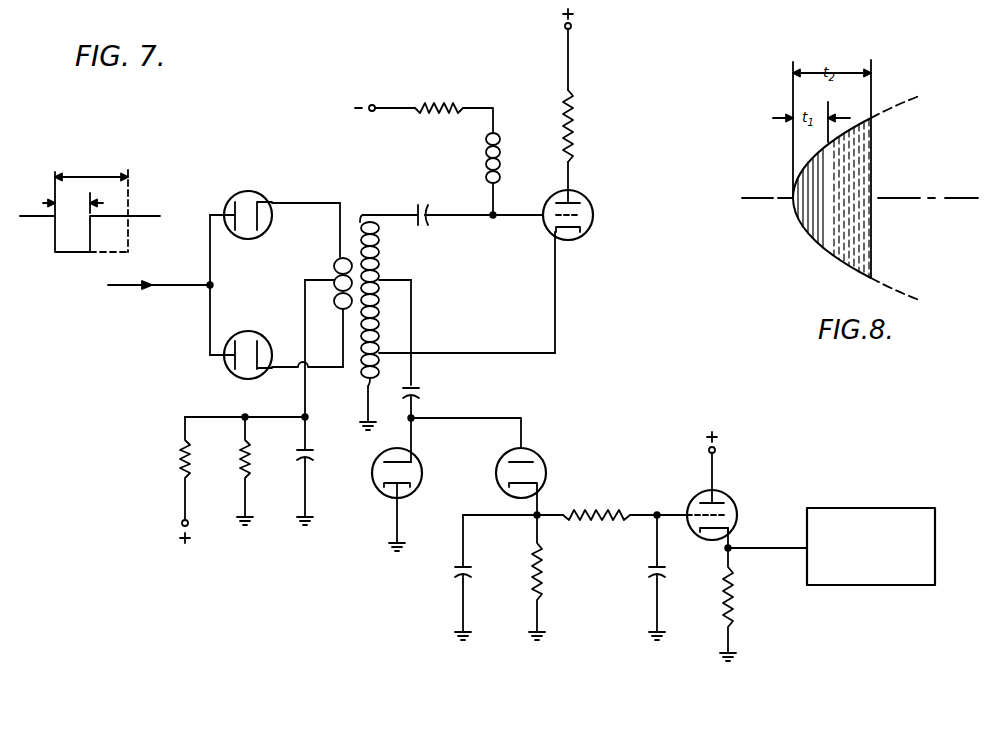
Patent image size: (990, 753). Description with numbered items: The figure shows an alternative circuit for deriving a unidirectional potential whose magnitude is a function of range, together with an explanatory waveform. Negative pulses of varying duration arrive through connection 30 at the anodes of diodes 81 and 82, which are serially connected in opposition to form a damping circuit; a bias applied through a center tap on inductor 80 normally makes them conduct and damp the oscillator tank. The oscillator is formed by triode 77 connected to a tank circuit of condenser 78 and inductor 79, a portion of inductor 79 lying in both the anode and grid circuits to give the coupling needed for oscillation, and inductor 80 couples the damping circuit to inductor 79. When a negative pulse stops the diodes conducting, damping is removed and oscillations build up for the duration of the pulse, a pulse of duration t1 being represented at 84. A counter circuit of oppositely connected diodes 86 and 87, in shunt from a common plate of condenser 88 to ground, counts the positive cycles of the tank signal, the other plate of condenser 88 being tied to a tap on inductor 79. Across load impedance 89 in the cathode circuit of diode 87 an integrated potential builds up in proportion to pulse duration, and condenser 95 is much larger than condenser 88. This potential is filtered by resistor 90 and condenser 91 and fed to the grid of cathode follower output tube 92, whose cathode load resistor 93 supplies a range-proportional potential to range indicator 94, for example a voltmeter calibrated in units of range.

The pulse 84 is at (38, 250).
The connection 30 is at (186, 288).
The diode 81 is at (265, 200).
The diode 82 is at (232, 373).
The inductor 80 is at (334, 277).
The inductor 79 is at (379, 301).
The condenser 78 is at (430, 225).
The triode 77 is at (586, 198).
The condenser 88 is at (418, 386).
The diode 86 is at (382, 498).
The diode 87 is at (546, 480).
The resistor 90 is at (578, 524).
The load impedance 89 is at (545, 583).
The condenser 95 is at (462, 580).
The condenser 91 is at (650, 580).
The cathode follower output tube 92 is at (725, 495).
The load resistor 93 is at (735, 592).
The range indicator 94 is at (875, 508).